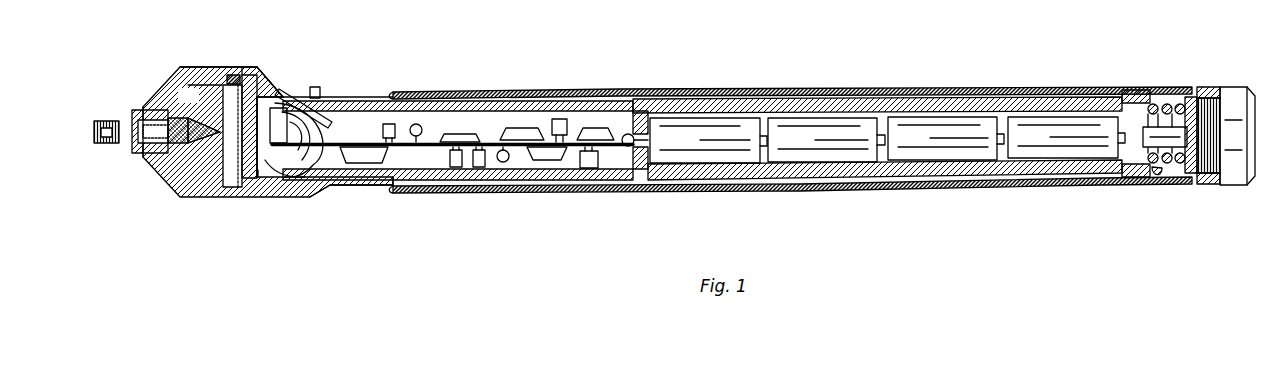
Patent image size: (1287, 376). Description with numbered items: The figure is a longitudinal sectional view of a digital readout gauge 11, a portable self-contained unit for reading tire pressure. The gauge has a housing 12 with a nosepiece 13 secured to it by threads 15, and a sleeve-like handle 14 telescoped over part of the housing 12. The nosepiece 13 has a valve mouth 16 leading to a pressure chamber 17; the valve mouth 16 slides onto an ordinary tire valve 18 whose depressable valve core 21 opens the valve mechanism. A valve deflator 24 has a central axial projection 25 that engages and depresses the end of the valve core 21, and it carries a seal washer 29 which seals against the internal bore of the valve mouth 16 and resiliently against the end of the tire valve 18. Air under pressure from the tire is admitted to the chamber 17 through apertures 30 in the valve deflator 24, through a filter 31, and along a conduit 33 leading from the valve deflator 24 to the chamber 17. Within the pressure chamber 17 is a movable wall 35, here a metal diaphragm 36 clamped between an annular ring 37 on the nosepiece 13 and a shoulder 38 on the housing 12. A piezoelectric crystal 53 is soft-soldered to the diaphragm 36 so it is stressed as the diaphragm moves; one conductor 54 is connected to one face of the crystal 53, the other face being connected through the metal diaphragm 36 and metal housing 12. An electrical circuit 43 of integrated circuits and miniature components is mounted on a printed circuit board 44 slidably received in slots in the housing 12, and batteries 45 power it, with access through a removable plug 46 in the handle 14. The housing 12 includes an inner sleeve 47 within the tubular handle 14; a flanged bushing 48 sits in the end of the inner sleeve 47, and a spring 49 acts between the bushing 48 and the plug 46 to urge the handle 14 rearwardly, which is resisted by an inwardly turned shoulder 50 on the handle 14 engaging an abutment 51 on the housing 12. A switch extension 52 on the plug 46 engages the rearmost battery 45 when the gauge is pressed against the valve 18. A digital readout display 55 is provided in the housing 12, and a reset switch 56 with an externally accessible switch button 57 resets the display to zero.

The digital readout gauge 11 is at (661, 63).
The housing 12 is at (372, 185).
The nosepiece 13 is at (190, 186).
The sleeve-like handle 14 is at (743, 91).
The threads 15 is at (204, 67).
The valve mouth 16 is at (134, 112).
The pressure chamber 17 is at (232, 77).
The tire valve 18 is at (101, 145).
The valve core 21 is at (116, 138).
The valve deflator 24 is at (146, 111).
The central axial projection 25 is at (142, 155).
The seal washer 29 is at (170, 118).
The apertures 30 is at (176, 114).
The filter 31 is at (205, 138).
The conduit 33 is at (212, 145).
The movable wall 35 is at (246, 78).
The metal diaphragm 36 is at (255, 178).
The annular ring 37 is at (226, 188).
The shoulder 38 is at (240, 185).
The electrical circuit 43 is at (462, 133).
The printed circuit board 44 is at (370, 142).
The batteries 45 is at (904, 120).
The removable plug 46 is at (1232, 98).
The inner sleeve 47 is at (966, 105).
The flanged bushing 48 is at (1124, 112).
The spring 49 is at (1170, 168).
The inwardly turned shoulder 50 is at (393, 100).
The abutment 51 is at (423, 95).
The switch extension 52 is at (1163, 127).
The piezoelectric crystal 53 is at (266, 82).
The conductor 54 is at (317, 171).
The digital readout display 55 is at (325, 104).
The reset switch 56 is at (279, 106).
The switch button 57 is at (316, 87).